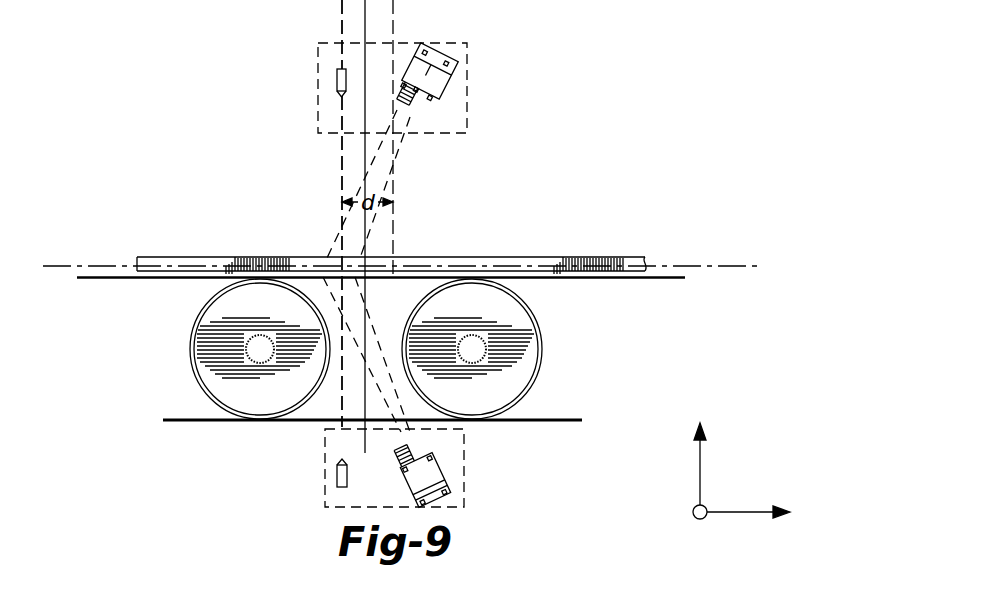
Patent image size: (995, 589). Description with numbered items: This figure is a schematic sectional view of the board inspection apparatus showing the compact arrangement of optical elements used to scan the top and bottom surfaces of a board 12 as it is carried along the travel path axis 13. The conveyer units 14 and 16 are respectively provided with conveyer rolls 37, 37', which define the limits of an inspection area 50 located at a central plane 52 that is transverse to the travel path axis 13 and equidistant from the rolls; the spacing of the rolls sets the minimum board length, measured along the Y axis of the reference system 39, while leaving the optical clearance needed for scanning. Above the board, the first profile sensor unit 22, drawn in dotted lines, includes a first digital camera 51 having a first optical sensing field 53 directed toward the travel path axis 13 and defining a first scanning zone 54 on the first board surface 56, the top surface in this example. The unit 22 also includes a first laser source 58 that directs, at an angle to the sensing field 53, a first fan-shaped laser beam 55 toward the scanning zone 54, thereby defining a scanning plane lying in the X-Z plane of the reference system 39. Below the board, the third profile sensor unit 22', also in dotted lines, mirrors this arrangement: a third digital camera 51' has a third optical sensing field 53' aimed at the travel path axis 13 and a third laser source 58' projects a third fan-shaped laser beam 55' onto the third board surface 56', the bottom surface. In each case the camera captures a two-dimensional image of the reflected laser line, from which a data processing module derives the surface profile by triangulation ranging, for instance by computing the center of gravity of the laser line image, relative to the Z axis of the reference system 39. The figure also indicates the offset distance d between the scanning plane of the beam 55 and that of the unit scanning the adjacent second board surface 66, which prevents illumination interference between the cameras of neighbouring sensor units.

The board 12 is at (186, 258).
The travel path axis 13 is at (673, 260).
The conveyer unit 14 is at (607, 292).
The conveyer unit 16 is at (112, 282).
The first profile sensor unit 22 is at (427, 88).
The third profile sensor unit 22' is at (443, 473).
The conveyer roll 37 is at (222, 349).
The conveyer roll 37' is at (515, 349).
The reference system 39 is at (730, 517).
The inspection area 50 is at (316, 428).
The first digital camera 51 is at (435, 60).
The third digital camera 51' is at (473, 471).
The central plane 52 is at (365, 33).
The first optical sensing field 53 is at (396, 184).
The third optical sensing field 53' is at (339, 413).
The first scanning zone 54 is at (355, 243).
The first fan-shaped laser beam 55 is at (303, 213).
The third fan-shaped laser beam 55' is at (265, 448).
The first board surface 56 is at (372, 239).
The third board surface 56' is at (159, 309).
The first laser source 58 is at (304, 90).
The third laser source 58' is at (291, 493).
The second board surface 66 is at (548, 258).